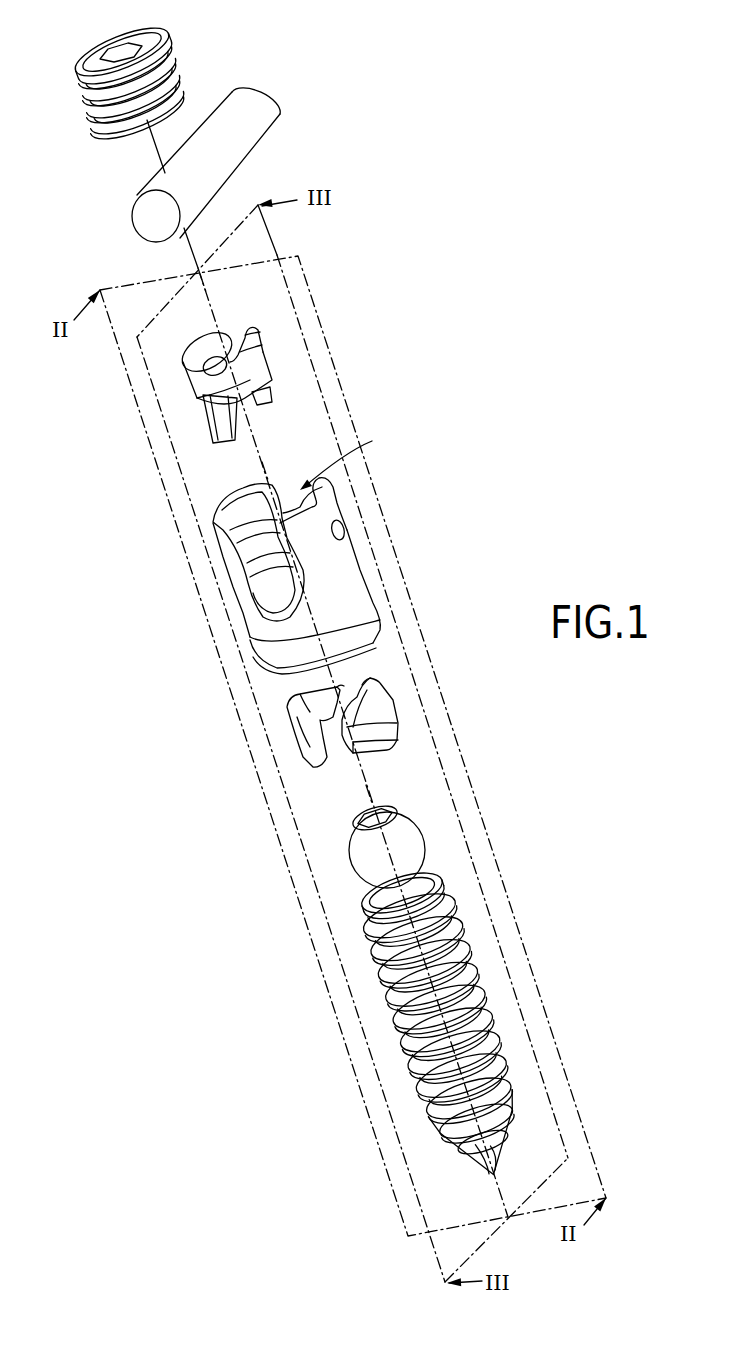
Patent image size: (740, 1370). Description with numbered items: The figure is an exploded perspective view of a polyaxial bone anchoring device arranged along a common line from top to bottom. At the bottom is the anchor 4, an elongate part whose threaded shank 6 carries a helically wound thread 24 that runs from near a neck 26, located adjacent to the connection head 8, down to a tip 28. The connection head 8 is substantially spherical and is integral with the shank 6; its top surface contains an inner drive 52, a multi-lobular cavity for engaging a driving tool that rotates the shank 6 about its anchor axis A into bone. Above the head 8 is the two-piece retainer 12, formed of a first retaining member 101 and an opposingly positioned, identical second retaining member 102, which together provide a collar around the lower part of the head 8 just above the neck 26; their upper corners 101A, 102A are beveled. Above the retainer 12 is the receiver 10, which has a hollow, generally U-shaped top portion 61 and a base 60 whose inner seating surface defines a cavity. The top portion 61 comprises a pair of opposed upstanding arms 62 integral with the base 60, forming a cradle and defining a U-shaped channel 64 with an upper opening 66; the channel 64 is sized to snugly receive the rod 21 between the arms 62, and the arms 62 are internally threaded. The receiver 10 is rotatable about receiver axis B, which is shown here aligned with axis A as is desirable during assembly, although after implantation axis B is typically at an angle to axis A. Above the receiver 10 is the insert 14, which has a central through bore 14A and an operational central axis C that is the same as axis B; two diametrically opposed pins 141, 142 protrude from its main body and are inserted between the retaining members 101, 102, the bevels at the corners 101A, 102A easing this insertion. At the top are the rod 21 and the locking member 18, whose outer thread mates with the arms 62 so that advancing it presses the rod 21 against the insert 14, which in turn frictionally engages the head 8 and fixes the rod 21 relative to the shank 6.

The anchor 4 is at (455, 1006).
The threaded shank 6 is at (431, 1037).
The connection head 8 is at (380, 844).
The receiver 10 is at (306, 547).
The two-piece retainer 12 is at (341, 726).
The insert 14 is at (229, 391).
The through bore 14A is at (210, 362).
The locking member 18 is at (93, 55).
The rod 21 is at (266, 104).
The thread 24 is at (440, 1009).
The neck 26 is at (403, 896).
The tip 28 is at (481, 1139).
The inner drive 52 is at (367, 820).
The base 60 is at (357, 625).
The top portion 61 is at (353, 577).
The arms 62 is at (338, 499).
The U-shaped channel 64 is at (280, 583).
The upper opening 66 is at (347, 455).
The first retaining member 101 is at (370, 715).
The upper corners of the first retaining member 101A is at (361, 715).
The second retaining member 102 is at (315, 726).
The upper corners of the second retaining member 102A is at (340, 686).
The first pin 141 is at (262, 404).
The second pin 142 is at (222, 440).
The anchor axis A is at (368, 794).
The receiver axis B is at (263, 468).
The operational central axis of the insert C is at (210, 297).